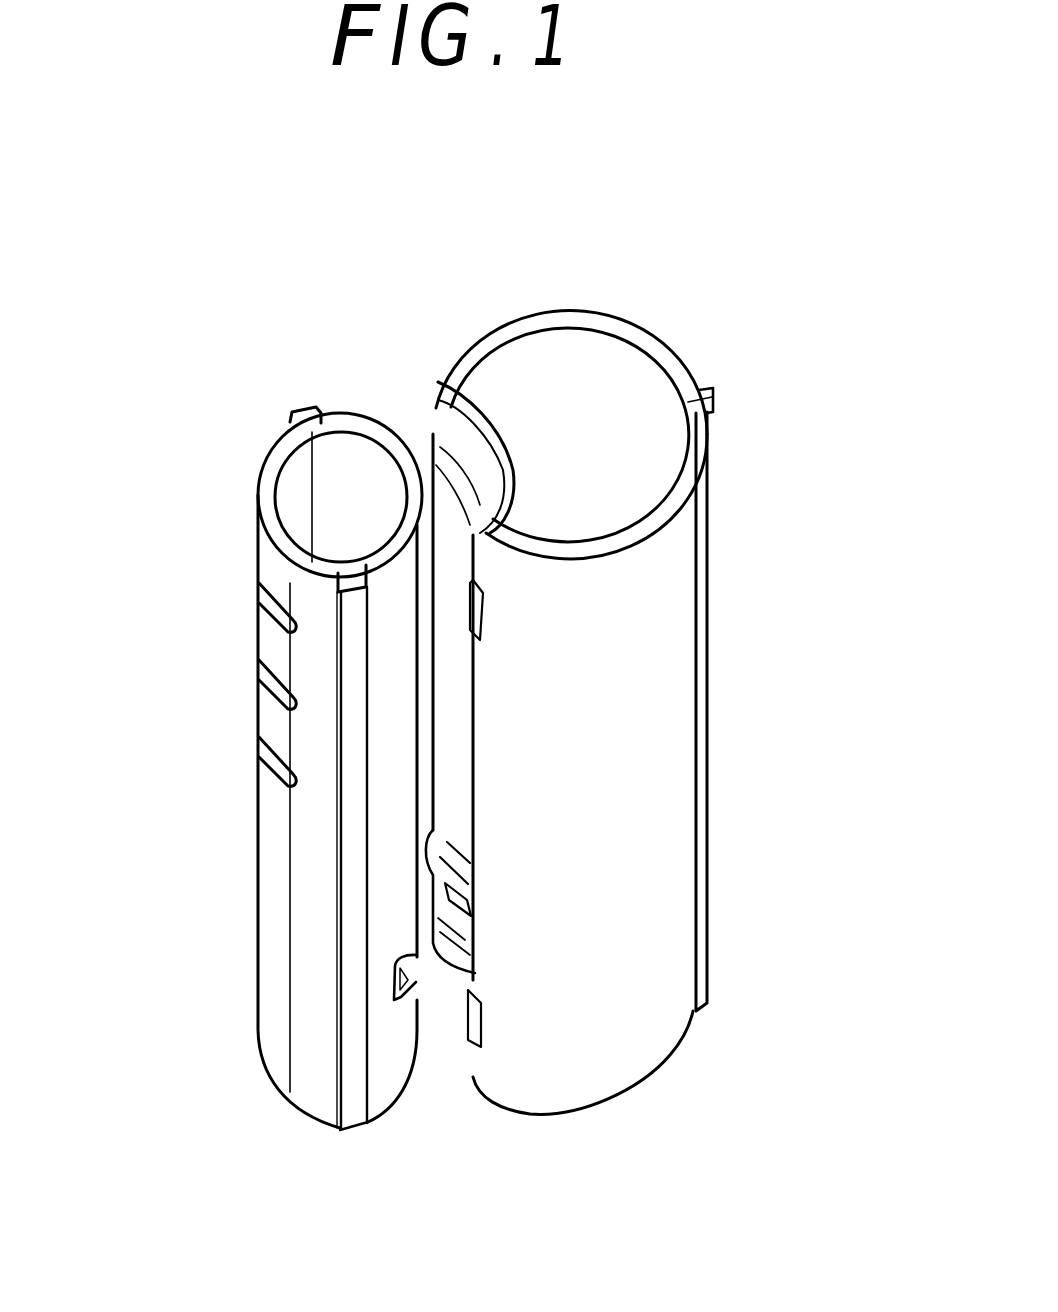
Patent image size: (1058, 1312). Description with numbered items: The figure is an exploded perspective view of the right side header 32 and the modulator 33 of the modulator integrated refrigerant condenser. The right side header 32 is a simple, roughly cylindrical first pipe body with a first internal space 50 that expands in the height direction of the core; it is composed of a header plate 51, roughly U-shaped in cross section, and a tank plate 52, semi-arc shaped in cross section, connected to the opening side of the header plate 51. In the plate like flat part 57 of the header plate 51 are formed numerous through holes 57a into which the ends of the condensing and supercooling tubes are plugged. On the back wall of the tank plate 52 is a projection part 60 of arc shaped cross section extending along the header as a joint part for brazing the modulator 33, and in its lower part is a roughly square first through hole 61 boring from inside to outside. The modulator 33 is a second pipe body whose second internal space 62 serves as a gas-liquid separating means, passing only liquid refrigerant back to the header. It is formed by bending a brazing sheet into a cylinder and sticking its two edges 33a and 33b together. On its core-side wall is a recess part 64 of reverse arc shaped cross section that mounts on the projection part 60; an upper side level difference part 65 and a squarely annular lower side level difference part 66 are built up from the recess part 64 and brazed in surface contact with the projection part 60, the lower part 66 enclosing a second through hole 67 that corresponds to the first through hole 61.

The right side header 32 is at (243, 471).
The modulator 33 is at (720, 546).
The edge of the brazing sheet 33a is at (700, 385).
The edge of the brazing sheet 33b is at (713, 413).
The first internal space 50 is at (350, 462).
The header plate 51 is at (327, 1105).
The tank plate 52 is at (382, 1085).
The plate like flat part 57 is at (275, 823).
The through holes 57a is at (277, 613).
The projection part 60 is at (402, 1060).
The first through hole 61 is at (415, 975).
The second internal space 62 is at (565, 365).
The recess part 64 is at (457, 705).
The upper side level difference part 65 is at (432, 470).
The lower side level difference part 66 is at (432, 833).
The second through hole 67 is at (470, 912).